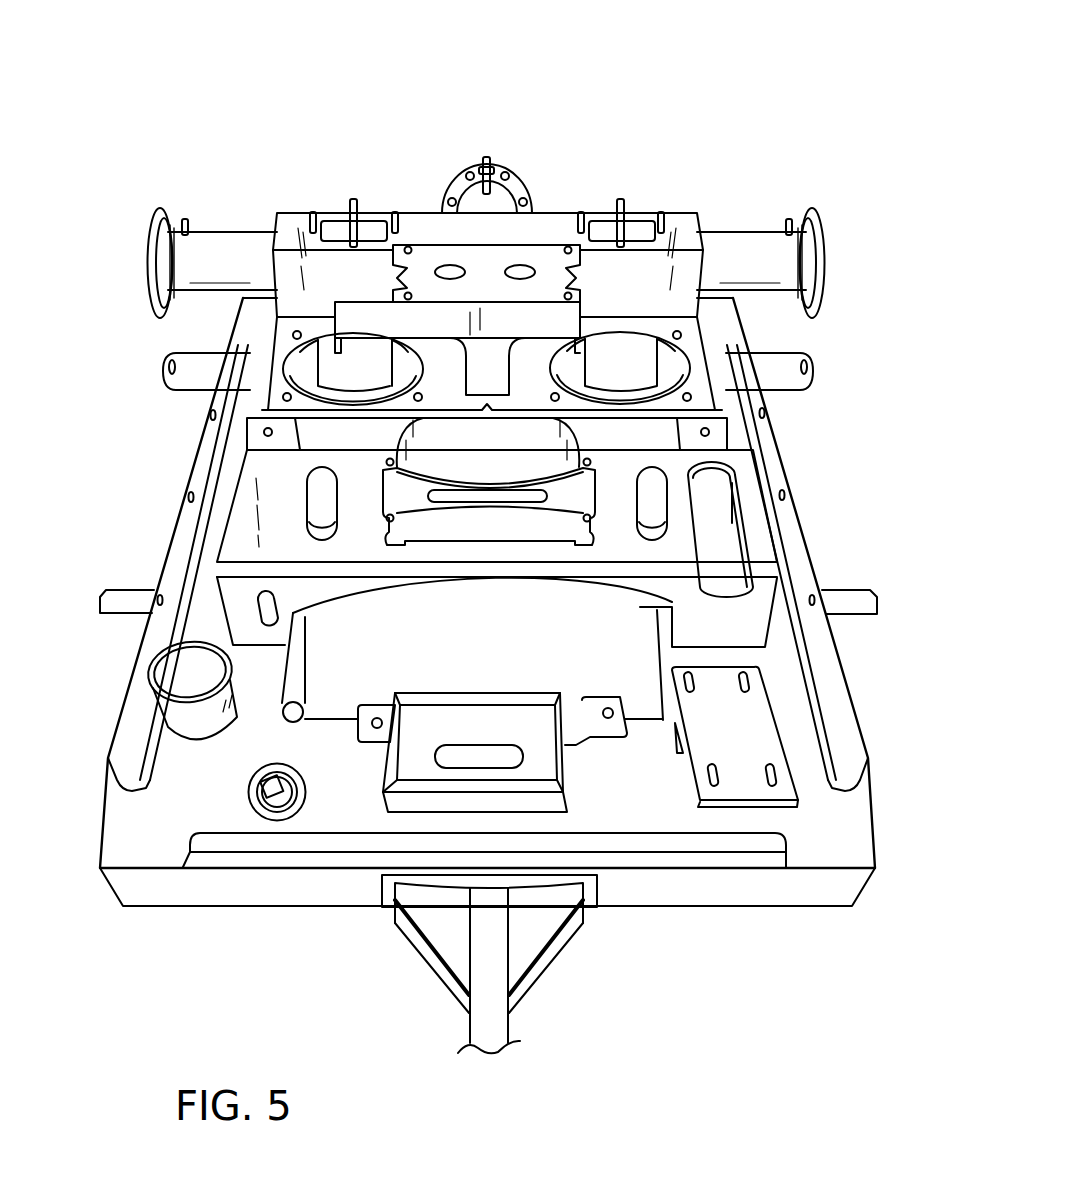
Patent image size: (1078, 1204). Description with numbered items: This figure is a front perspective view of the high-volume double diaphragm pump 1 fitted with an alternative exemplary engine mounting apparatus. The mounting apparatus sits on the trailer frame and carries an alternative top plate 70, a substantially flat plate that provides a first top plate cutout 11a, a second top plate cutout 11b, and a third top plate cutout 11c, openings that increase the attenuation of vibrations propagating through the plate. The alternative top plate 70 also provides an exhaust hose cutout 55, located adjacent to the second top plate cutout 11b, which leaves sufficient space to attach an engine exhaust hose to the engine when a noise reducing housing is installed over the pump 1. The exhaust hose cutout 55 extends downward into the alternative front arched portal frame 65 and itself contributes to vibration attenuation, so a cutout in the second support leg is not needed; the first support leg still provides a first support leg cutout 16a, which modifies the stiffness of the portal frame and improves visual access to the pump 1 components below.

The high-volume double diaphragm pump 1 is at (166, 74).
The first top plate cutout 11a is at (322, 530).
The second top plate cutout 11b is at (657, 528).
The third top plate cutout 11c is at (467, 523).
The first support leg cutout 16a is at (262, 618).
The exhaust hose cutout 55 is at (732, 550).
The alternative front arched portal frame 65 is at (668, 600).
The alternative top plate 70 is at (250, 512).